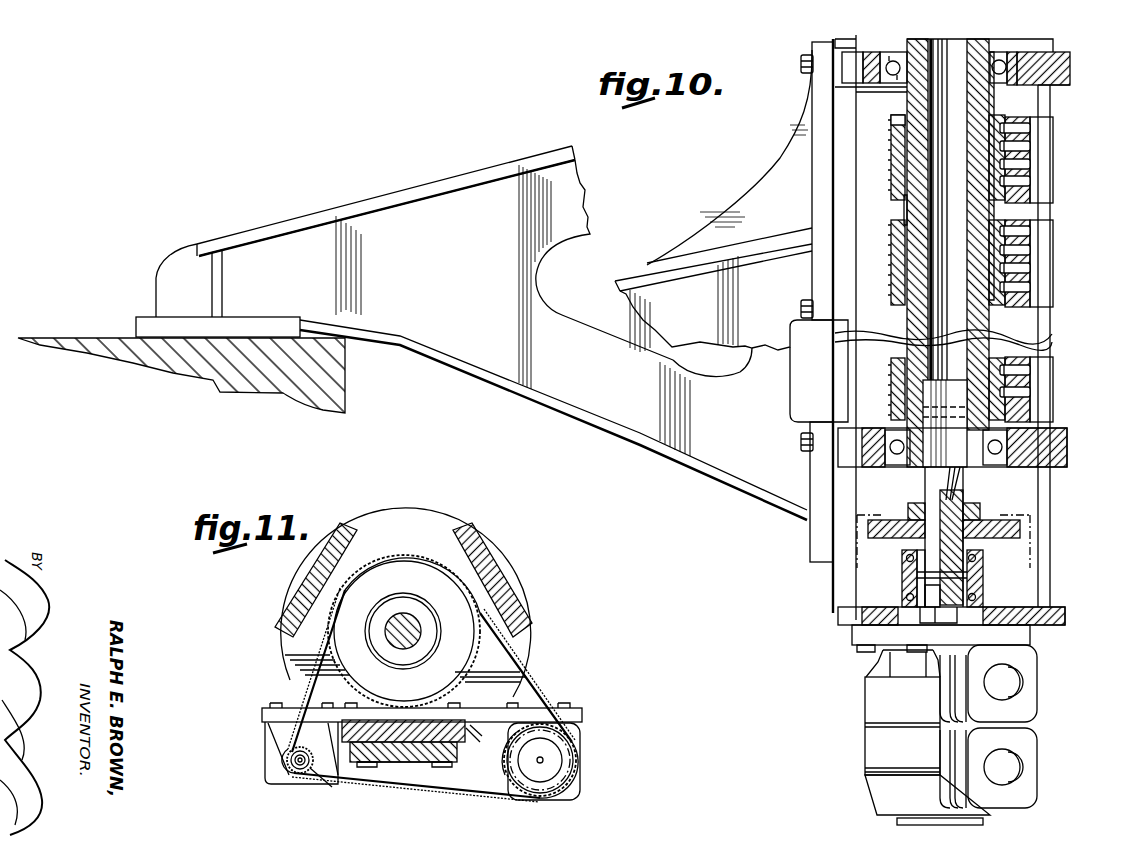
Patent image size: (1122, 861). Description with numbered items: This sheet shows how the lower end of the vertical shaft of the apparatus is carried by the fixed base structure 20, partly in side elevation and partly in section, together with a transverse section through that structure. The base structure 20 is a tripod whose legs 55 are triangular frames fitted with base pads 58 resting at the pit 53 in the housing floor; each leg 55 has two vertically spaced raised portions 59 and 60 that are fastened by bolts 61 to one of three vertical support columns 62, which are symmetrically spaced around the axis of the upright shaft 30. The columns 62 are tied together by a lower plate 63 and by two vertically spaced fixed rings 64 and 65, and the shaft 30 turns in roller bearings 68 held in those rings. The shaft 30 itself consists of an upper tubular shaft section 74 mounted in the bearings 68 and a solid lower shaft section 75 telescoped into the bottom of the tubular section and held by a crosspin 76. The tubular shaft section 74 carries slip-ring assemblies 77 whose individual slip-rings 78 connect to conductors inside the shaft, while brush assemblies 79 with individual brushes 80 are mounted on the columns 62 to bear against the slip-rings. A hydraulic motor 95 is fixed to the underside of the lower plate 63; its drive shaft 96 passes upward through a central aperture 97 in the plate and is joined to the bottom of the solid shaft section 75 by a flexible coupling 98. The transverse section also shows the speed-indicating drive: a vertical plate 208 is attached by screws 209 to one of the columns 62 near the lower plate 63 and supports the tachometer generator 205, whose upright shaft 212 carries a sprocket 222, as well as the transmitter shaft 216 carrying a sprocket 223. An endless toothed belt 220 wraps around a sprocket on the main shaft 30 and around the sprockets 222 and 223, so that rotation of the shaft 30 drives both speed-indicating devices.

In FIG. 10, the fixed base structure 20 is at (263, 217).
In FIG. 10, the upright shaft 30 is at (898, 103).
In FIG. 11, the upright shaft 30 is at (410, 614).
In FIG. 10, the pit 53 is at (345, 383).
In FIG. 10, the leg 55 is at (400, 188).
In FIG. 10, the base pad 58 is at (142, 317).
In FIG. 10, the raised portion 59 is at (812, 187).
In FIG. 10, the raised portion 60 is at (810, 484).
In FIG. 11, the raised portion 60 is at (455, 764).
In FIG. 10, the bolt 61 is at (801, 64).
In FIG. 10, the vertical support column 62 is at (832, 390).
In FIG. 11, the vertical support column 62 is at (293, 592).
In FIG. 10, the lower plate 63 is at (868, 608).
In FIG. 11, the lower plate 63 is at (440, 520).
In FIG. 10, the fixed ring 64 is at (1070, 78).
In FIG. 10, the fixed ring 65 is at (1067, 457).
In FIG. 10, the roller bearing 68 is at (999, 85).
In FIG. 10, the upper tubular shaft section 74 is at (905, 210).
In FIG. 10, the solid lower shaft section 75 is at (925, 484).
In FIG. 10, the crosspin 76 is at (918, 415).
In FIG. 10, the slip-ring assembly 77 is at (886, 166).
In FIG. 10, the slip-ring 78 is at (884, 127).
In FIG. 10, the brush assembly 79 is at (1043, 140).
In FIG. 10, the brush 80 is at (1033, 182).
In FIG. 10, the hydraulic motor 95 is at (873, 703).
In FIG. 10, the drive shaft 96 is at (938, 620).
In FIG. 10, the central aperture 97 is at (980, 610).
In FIG. 10, the flexible coupling 98 is at (983, 565).
In FIG. 11, the tachometer generator 205 is at (298, 784).
In FIG. 11, the vertical plate 208 is at (400, 716).
In FIG. 11, the screw 209 is at (272, 703).
In FIG. 11, the upright shaft of the generator 212 is at (297, 768).
In FIG. 11, the transmitter shaft 216 is at (548, 768).
In FIG. 11, the toothed belt 220 is at (400, 790).
In FIG. 11, the sprocket 222 is at (318, 776).
In FIG. 11, the sprocket 223 is at (530, 792).